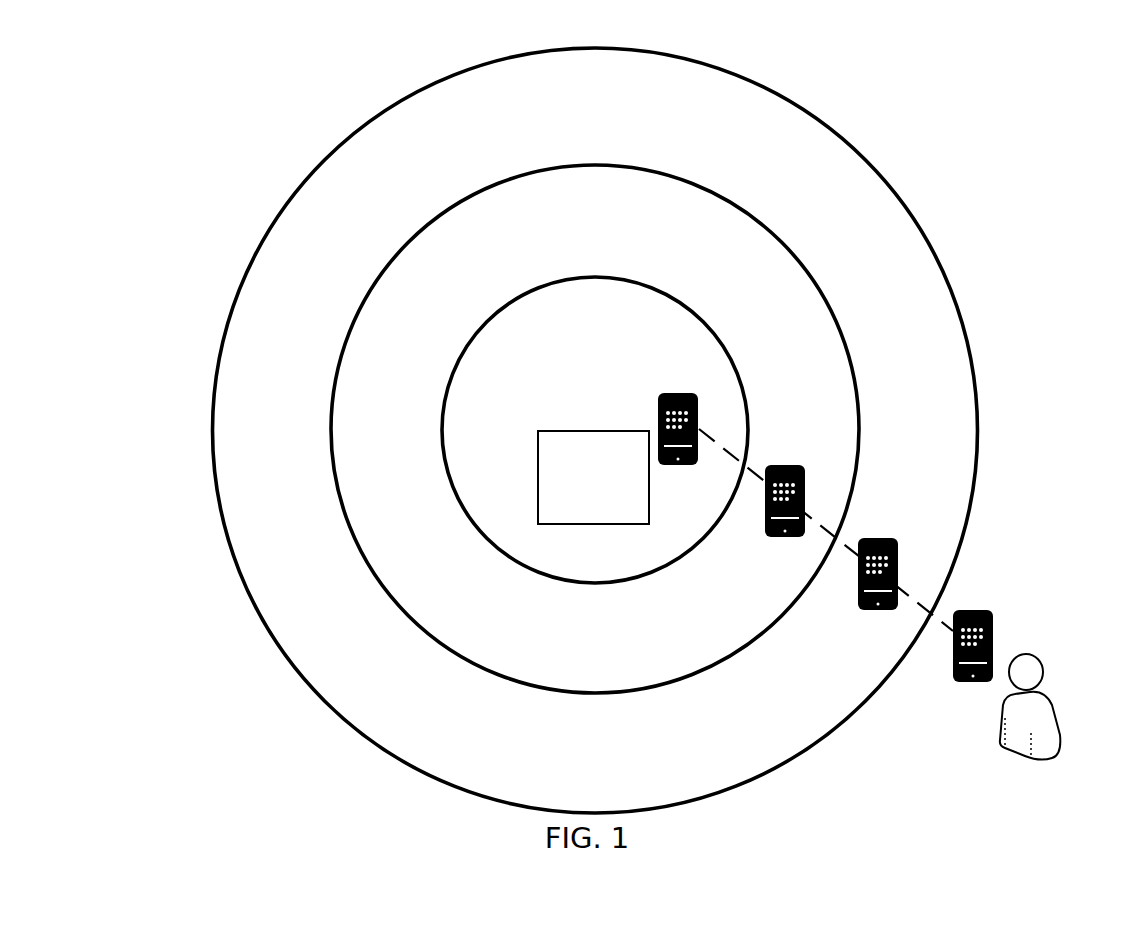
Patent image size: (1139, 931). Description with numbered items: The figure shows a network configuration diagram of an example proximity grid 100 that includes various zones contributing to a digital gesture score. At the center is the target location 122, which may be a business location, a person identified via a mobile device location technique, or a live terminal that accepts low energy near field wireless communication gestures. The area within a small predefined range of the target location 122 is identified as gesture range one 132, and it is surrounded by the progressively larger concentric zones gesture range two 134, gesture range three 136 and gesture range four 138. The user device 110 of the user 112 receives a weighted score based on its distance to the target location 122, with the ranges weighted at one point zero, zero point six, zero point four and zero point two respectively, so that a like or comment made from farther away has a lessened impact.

The proximity grid 100 is at (60, 55).
The user device 110 is at (825, 578).
The user 112 is at (1029, 735).
The target location 122 is at (593, 477).
The gesture range one 132 is at (595, 430).
The gesture range two 134 is at (595, 429).
The gesture range three 136 is at (595, 430).
The gesture range four 138 is at (1028, 595).